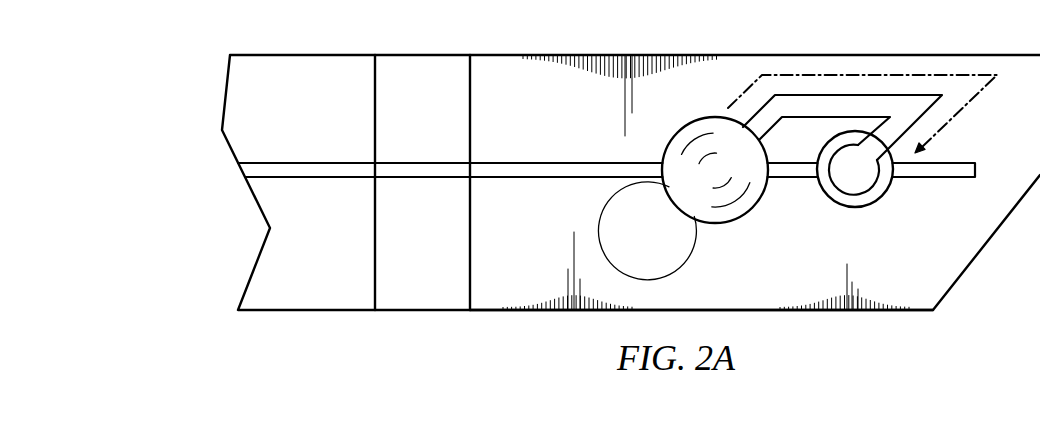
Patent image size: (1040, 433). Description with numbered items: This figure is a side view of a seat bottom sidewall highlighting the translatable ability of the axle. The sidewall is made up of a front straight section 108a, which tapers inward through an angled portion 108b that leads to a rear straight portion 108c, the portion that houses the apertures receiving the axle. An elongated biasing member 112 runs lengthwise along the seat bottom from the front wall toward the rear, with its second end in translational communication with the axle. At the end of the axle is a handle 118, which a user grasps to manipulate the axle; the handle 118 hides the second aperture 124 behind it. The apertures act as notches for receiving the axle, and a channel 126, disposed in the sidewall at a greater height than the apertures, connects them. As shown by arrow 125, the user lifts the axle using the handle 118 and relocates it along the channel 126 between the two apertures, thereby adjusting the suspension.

The front straight section 108a is at (346, 249).
The angled portion 108b is at (446, 249).
The rear straight portion 108c is at (720, 276).
The elongated biasing member 112 is at (510, 178).
The handle 118 is at (688, 192).
The second aperture 124 is at (850, 178).
The arrow 125 is at (932, 75).
The channel 126 is at (820, 108).